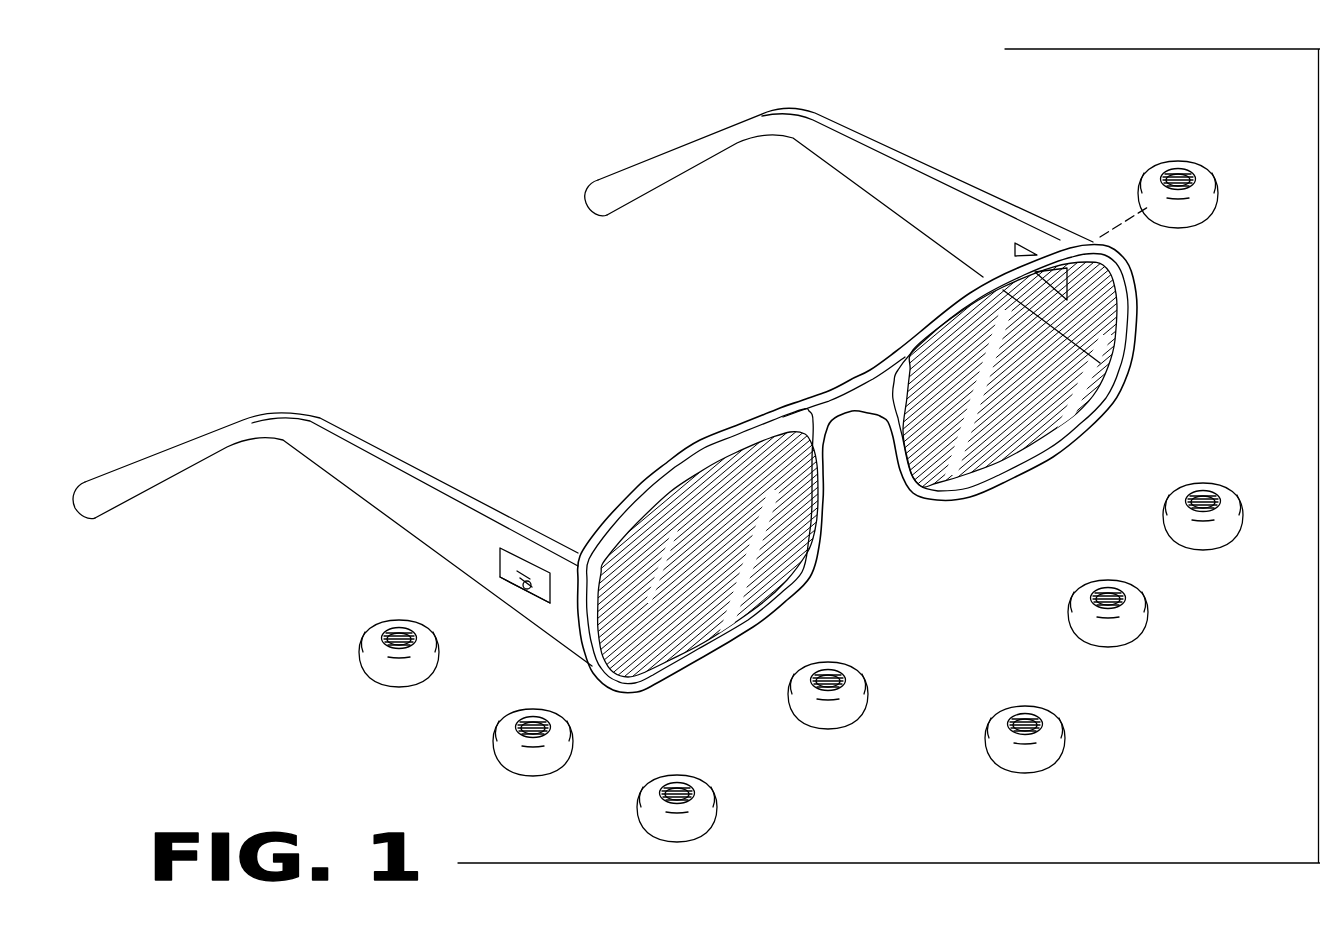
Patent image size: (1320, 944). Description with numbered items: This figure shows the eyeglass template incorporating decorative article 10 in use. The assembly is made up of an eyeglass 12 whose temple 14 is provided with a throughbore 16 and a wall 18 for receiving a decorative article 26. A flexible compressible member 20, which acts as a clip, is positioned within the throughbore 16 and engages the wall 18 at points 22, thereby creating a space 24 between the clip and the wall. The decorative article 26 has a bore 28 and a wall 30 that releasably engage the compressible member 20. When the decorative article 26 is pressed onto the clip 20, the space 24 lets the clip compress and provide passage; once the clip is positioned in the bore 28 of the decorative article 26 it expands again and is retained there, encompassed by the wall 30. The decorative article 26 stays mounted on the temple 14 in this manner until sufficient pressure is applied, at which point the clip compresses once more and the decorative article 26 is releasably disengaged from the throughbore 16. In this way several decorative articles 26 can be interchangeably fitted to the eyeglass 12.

The eyeglass template incorporating decorative article 10 is at (565, 330).
The eyeglass 12 is at (826, 392).
The temple 14 is at (178, 447).
The throughbore 16 is at (503, 573).
The wall 18 is at (505, 558).
The compressible member 20 is at (527, 582).
The points 22 is at (520, 581).
The space 24 is at (530, 587).
The decorative article 26 is at (1140, 196).
The bore 28 is at (1183, 172).
The wall 30 is at (1173, 177).